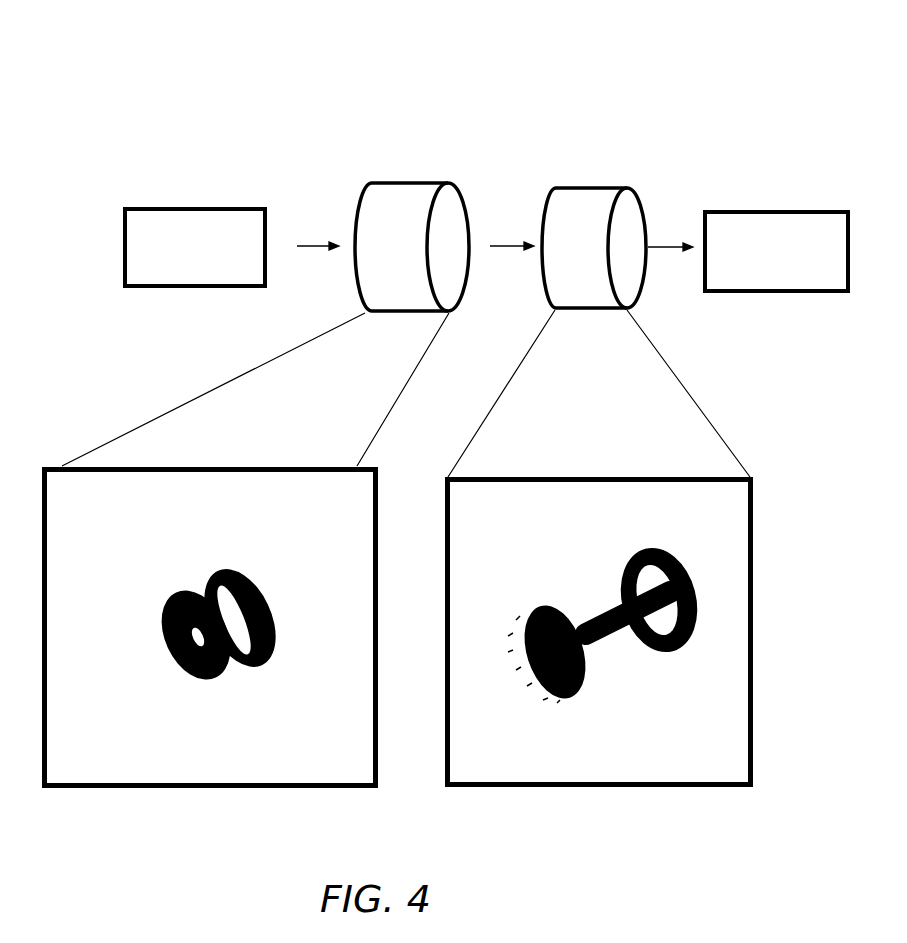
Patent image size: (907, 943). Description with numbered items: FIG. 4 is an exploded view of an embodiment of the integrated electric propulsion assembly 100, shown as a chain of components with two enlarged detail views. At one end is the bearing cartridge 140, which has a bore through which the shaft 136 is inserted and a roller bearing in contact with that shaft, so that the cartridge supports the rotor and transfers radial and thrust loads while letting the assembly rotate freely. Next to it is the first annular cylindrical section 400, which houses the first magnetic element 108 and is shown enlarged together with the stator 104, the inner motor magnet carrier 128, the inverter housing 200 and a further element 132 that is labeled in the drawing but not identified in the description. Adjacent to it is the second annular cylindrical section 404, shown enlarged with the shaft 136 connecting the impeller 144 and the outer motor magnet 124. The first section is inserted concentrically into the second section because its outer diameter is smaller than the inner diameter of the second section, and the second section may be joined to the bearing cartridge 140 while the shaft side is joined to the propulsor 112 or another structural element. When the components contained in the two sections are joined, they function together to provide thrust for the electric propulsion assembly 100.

The electric propulsion assembly 100 is at (776, 82).
The bearing cartridge 140 is at (195, 247).
The first annular cylindrical section 400 is at (398, 183).
The second annular cylindrical section 404 is at (583, 188).
The propulsor 112 is at (776, 251).
The stator 104 is at (175, 590).
The inner motor magnet carrier 128 is at (240, 572).
The bore 132 is at (166, 628).
The inverter housing 200 is at (232, 668).
The first magnetic element 108 is at (207, 683).
The outer motor magnet 124 is at (617, 582).
The shaft 136 is at (603, 618).
The impeller 144 is at (577, 700).